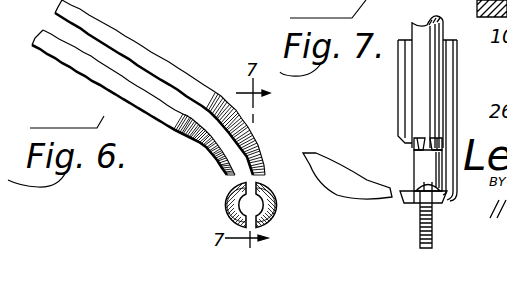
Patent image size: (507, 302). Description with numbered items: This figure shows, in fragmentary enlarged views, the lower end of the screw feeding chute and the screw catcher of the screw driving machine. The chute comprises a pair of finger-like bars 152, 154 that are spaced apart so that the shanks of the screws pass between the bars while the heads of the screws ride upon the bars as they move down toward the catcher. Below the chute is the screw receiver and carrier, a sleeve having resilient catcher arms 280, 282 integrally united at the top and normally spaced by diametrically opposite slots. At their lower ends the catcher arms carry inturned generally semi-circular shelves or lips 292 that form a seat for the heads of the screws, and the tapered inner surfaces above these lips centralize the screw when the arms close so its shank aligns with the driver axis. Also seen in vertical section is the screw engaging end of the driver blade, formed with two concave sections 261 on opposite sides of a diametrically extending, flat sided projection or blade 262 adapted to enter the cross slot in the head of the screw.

In FIG. 6, the finger-like bar 152 is at (78, 65).
In FIG. 6, the finger-like bar 154 is at (148, 63).
In FIG. 7, the finger-like bar 154 is at (315, 150).
In FIG. 6, the resilient catcher arm 280 is at (226, 212).
In FIG. 6, the resilient catcher arm 282 is at (276, 212).
In FIG. 7, the concave section 261 is at (417, 150).
In FIG. 7, the flat sided projection or blade 262 is at (417, 162).
In FIG. 7, the semi-circular shelf or lip 292 is at (412, 205).